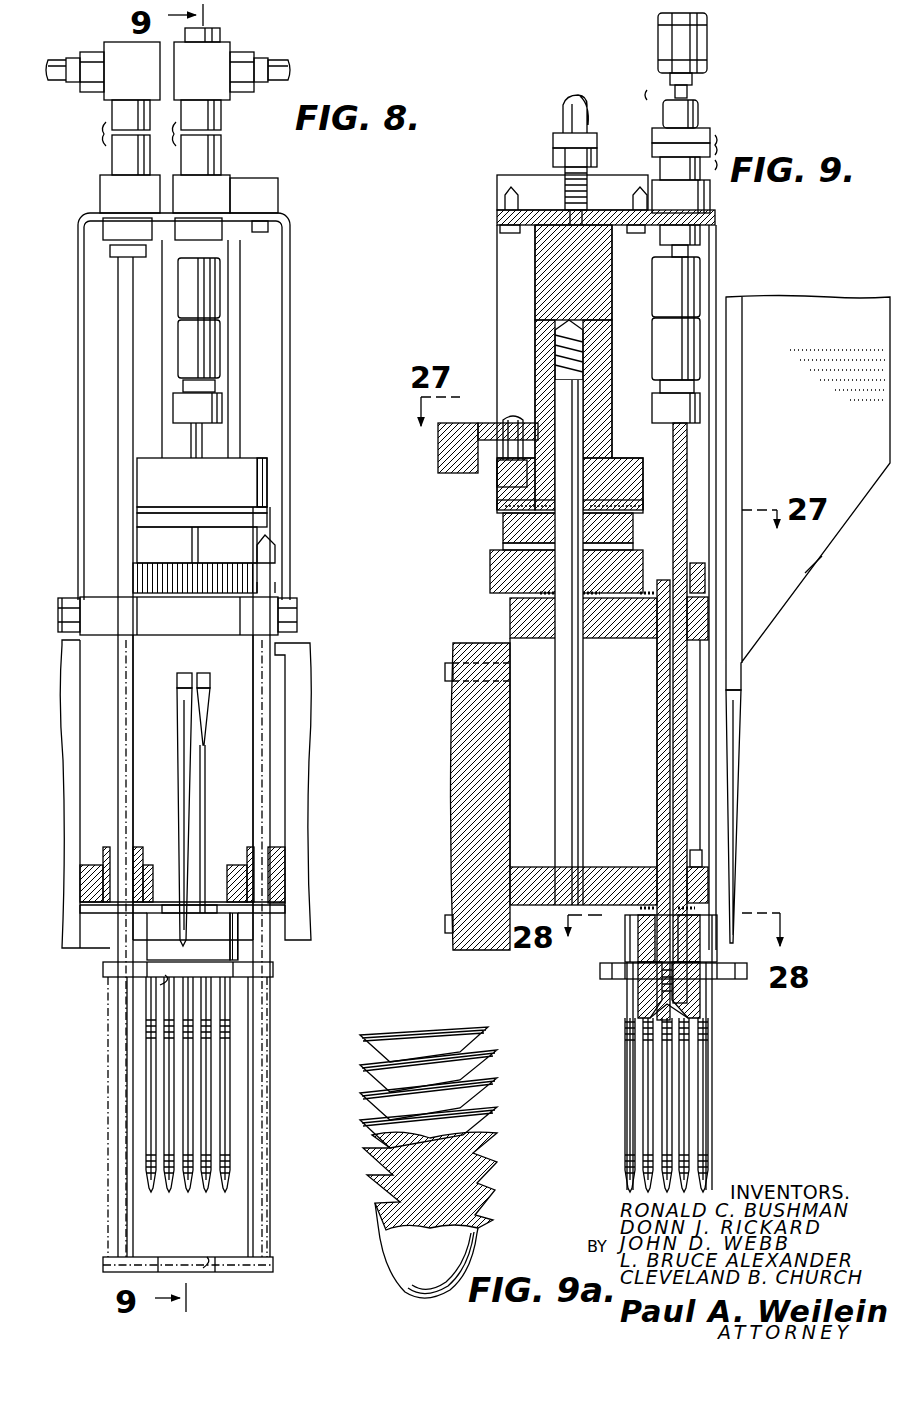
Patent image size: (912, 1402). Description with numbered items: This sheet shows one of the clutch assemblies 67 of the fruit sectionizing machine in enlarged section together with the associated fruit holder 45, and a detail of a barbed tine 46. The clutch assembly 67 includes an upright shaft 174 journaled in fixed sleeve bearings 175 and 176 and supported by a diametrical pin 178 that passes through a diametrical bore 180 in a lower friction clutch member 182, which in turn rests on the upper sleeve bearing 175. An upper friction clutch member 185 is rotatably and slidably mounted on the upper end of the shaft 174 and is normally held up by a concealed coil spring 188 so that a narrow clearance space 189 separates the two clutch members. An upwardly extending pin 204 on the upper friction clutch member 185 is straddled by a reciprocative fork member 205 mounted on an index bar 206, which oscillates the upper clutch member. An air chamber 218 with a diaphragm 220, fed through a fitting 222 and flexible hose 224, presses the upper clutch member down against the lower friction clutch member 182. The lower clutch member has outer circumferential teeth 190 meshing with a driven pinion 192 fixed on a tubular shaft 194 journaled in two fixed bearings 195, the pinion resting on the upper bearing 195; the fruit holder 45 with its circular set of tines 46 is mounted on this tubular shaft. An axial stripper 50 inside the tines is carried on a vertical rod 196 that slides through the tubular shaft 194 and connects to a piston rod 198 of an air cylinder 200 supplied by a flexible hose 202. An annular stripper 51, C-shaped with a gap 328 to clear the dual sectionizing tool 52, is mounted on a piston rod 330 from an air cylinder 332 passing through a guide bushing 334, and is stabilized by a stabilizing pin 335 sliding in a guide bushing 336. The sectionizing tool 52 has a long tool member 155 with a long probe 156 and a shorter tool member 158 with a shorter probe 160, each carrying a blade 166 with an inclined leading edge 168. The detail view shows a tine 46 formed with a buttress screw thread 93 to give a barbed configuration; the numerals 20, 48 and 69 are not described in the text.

In FIG. 9, the fluid fitting 20 is at (680, 48).
In FIG. 8, the fruit holder 45 is at (240, 936).
In FIG. 9, the fruit holder 45 is at (622, 952).
In FIG. 8, the tines 46 is at (172, 1132).
In FIG. 9, the tines 46 is at (678, 1158).
In FIG. 9A, the tines 46 is at (455, 1178).
In FIG. 8, the tube holder block 48 is at (155, 930).
In FIG. 9, the tube holder block 48 is at (648, 931).
In FIG. 8, the axial stripper 50 is at (180, 1006).
In FIG. 9, the axial stripper 50 is at (700, 1010).
In FIG. 8, the annular stripper 51 is at (270, 972).
In FIG. 9, the annular stripper 51 is at (613, 971).
In FIG. 9, the dual sectionizing tool 52 is at (808, 463).
In FIG. 8, the clutch assembly 67 is at (76, 272).
In FIG. 9, the clutch assembly 67 is at (495, 197).
In FIG. 8, the cylinder body 69 is at (300, 648).
In FIG. 9, the cylinder body 69 is at (458, 740).
In FIG. 9A, the buttress screw thread 93 is at (490, 1057).
In FIG. 8, the sectionizing tool member 155 is at (176, 676).
In FIG. 9, the sectionizing tool member 155 is at (812, 572).
In FIG. 8, the probe 156 is at (183, 812).
In FIG. 9, the probe 156 is at (736, 820).
In FIG. 8, the sectionizing tool member 158 is at (226, 668).
In FIG. 8, the probe 160 is at (205, 698).
In FIG. 9, the blade 166 is at (834, 294).
In FIG. 9, the inclined leading edge 168 is at (832, 524).
In FIG. 9, the upright shaft 174 is at (566, 716).
In FIG. 9, the sleeve bearing 175 is at (590, 640).
In FIG. 9, the sleeve bearing 176 is at (583, 866).
In FIG. 9, the diametrical pin 178 is at (515, 546).
In FIG. 9, the diametrical bore 180 is at (520, 556).
In FIG. 8, the lower friction clutch member 182 is at (263, 541).
In FIG. 9, the lower friction clutch member 182 is at (498, 578).
In FIG. 8, the upper friction clutch member 185 is at (228, 322).
In FIG. 9, the upper friction clutch member 185 is at (600, 430).
In FIG. 9, the coil spring 188 is at (553, 340).
In FIG. 9, the clearance space 189 is at (500, 505).
In FIG. 8, the outer circumferential teeth 190 is at (153, 567).
In FIG. 9, the outer circumferential teeth 190 is at (510, 595).
In FIG. 8, the driven pinion 192 is at (208, 572).
In FIG. 9, the driven pinion 192 is at (705, 572).
In FIG. 8, the tubular shaft 194 is at (204, 792).
In FIG. 9, the tubular shaft 194 is at (658, 750).
In FIG. 9, the fixed bearing 195 is at (706, 608).
In FIG. 8, the vertical rod 196 is at (205, 431).
In FIG. 9, the vertical rod 196 is at (672, 788).
In FIG. 8, the piston rod 198 is at (208, 246).
In FIG. 9, the piston rod 198 is at (690, 110).
In FIG. 8, the air cylinder 200 is at (208, 147).
In FIG. 8, the flexible hose 202 is at (282, 66).
In FIG. 9, the pin 204 is at (509, 424).
In FIG. 9, the fork member 205 is at (446, 453).
In FIG. 9, the index bar 206 is at (497, 490).
In FIG. 9, the air chamber 218 is at (570, 207).
In FIG. 9, the diaphragm 220 is at (590, 210).
In FIG. 9, the fitting 222 is at (592, 142).
In FIG. 9, the flexible hose 224 is at (568, 116).
In FIG. 8, the gap 328 is at (160, 983).
In FIG. 8, the piston rod 330 is at (122, 741).
In FIG. 8, the air cylinder 332 is at (120, 160).
In FIG. 8, the guide bushing 334 is at (101, 851).
In FIG. 8, the stabilizing pin 335 is at (269, 738).
In FIG. 9, the stabilizing pin 335 is at (692, 796).
In FIG. 8, the guide bushing 336 is at (286, 866).